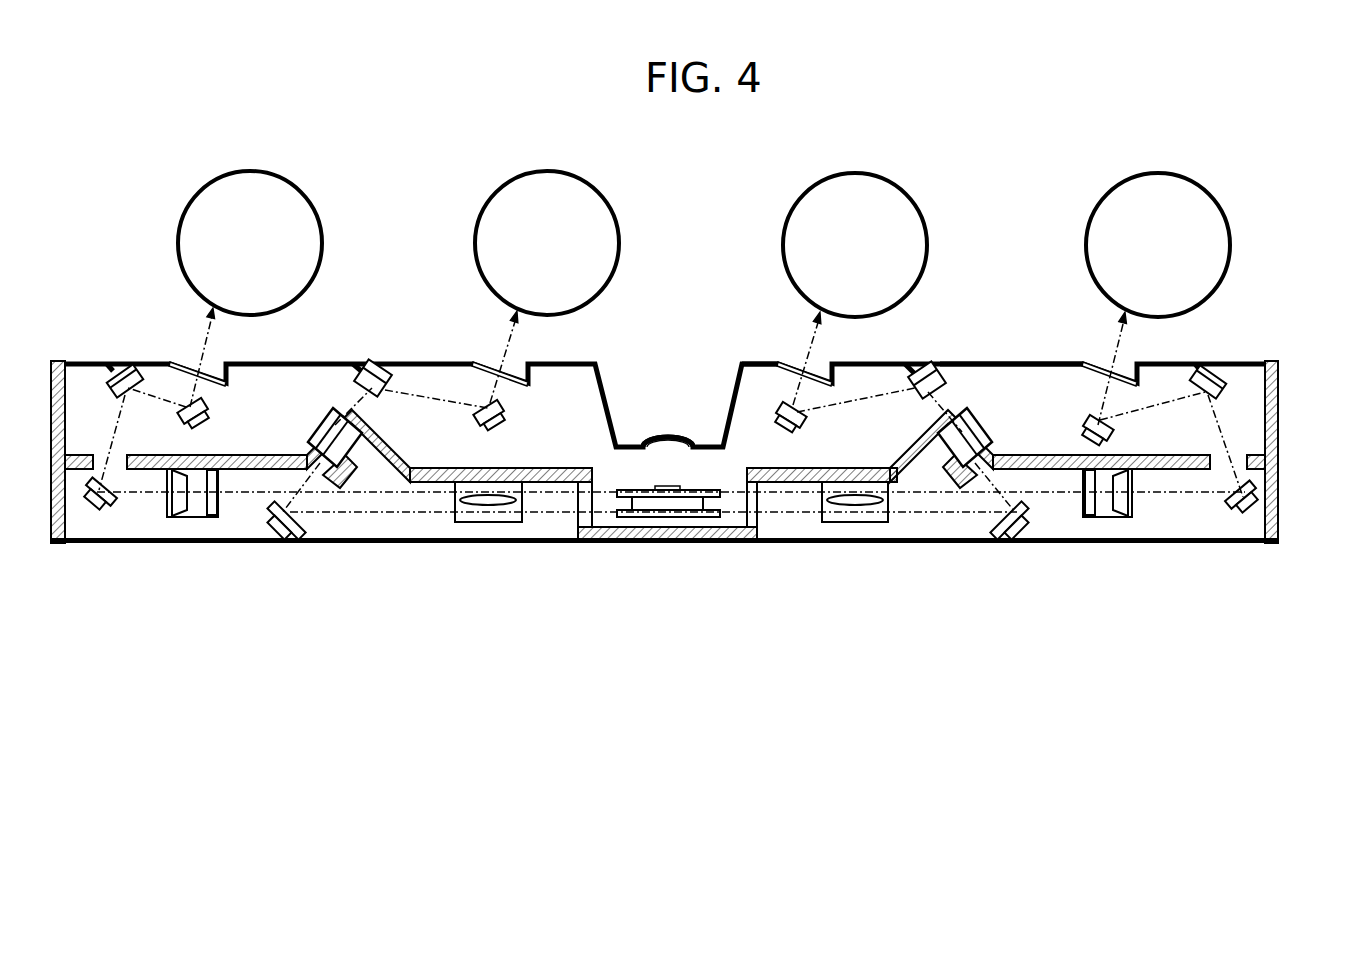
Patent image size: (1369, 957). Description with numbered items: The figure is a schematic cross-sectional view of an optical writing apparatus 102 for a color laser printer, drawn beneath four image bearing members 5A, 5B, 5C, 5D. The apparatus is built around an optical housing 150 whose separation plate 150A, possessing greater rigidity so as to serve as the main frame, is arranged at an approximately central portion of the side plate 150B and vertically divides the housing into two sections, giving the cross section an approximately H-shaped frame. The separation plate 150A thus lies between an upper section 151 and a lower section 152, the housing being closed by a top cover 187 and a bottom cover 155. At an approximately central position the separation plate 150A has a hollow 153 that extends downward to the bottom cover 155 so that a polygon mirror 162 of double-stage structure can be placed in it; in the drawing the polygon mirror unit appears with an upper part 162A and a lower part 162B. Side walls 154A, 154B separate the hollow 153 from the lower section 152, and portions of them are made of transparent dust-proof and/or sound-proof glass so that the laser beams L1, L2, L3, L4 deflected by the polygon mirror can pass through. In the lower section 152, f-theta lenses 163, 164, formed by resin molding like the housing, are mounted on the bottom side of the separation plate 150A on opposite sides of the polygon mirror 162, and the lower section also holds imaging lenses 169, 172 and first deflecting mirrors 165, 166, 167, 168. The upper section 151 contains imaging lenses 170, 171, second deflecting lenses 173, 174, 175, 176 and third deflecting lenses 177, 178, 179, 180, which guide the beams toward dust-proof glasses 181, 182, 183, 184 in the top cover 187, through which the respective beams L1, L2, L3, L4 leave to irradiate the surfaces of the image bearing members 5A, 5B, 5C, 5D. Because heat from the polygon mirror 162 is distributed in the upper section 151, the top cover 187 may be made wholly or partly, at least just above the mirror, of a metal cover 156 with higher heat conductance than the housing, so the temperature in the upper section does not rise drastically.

The image bearing member 5A is at (304, 192).
The image bearing member 5B is at (603, 192).
The image bearing member 5C is at (910, 192).
The image bearing member 5D is at (1215, 192).
The optical writing apparatus 102 is at (1270, 278).
The optical housing 150 is at (1288, 376).
The separation plate 150A is at (1163, 469).
The side plate 150B is at (1278, 443).
The upper section 151 is at (1017, 368).
The lower section 152 is at (1052, 525).
The hollow 153 is at (603, 497).
The side wall 154A is at (585, 495).
The side wall 154B is at (758, 497).
The bottom cover 155 is at (415, 545).
The metal cover 156 is at (746, 362).
The polygon mirror 162 is at (695, 500).
The deflector cover 162A is at (628, 493).
The deflector base plate 162B is at (641, 518).
The f-theta lens 163 is at (487, 523).
The f-theta lens 164 is at (855, 523).
The first deflecting mirror 165 is at (103, 512).
The first deflecting mirror 166 is at (288, 548).
The first deflecting mirror 167 is at (1000, 550).
The first deflecting mirror 168 is at (1242, 518).
The imaging lens 169 is at (195, 520).
The imaging lens 170 is at (328, 430).
The imaging lens 171 is at (973, 433).
The imaging lens 172 is at (1105, 518).
The second deflecting lens 173 is at (112, 368).
The second deflecting lens 174 is at (392, 378).
The second deflecting lens 175 is at (937, 368).
The second deflecting lens 176 is at (1222, 372).
The third deflecting lens 177 is at (207, 428).
The third deflecting lens 178 is at (478, 418).
The third deflecting lens 179 is at (815, 418).
The third deflecting lens 180 is at (1115, 428).
The dust-proof glass 181 is at (185, 368).
The dust-proof glass 182 is at (487, 365).
The dust-proof glass 183 is at (795, 368).
The dust-proof glass 184 is at (1095, 368).
The top cover 187 is at (385, 362).
The laser beam L1 is at (222, 353).
The laser beam L2 is at (522, 355).
The laser beam L3 is at (826, 353).
The laser beam L4 is at (1130, 355).